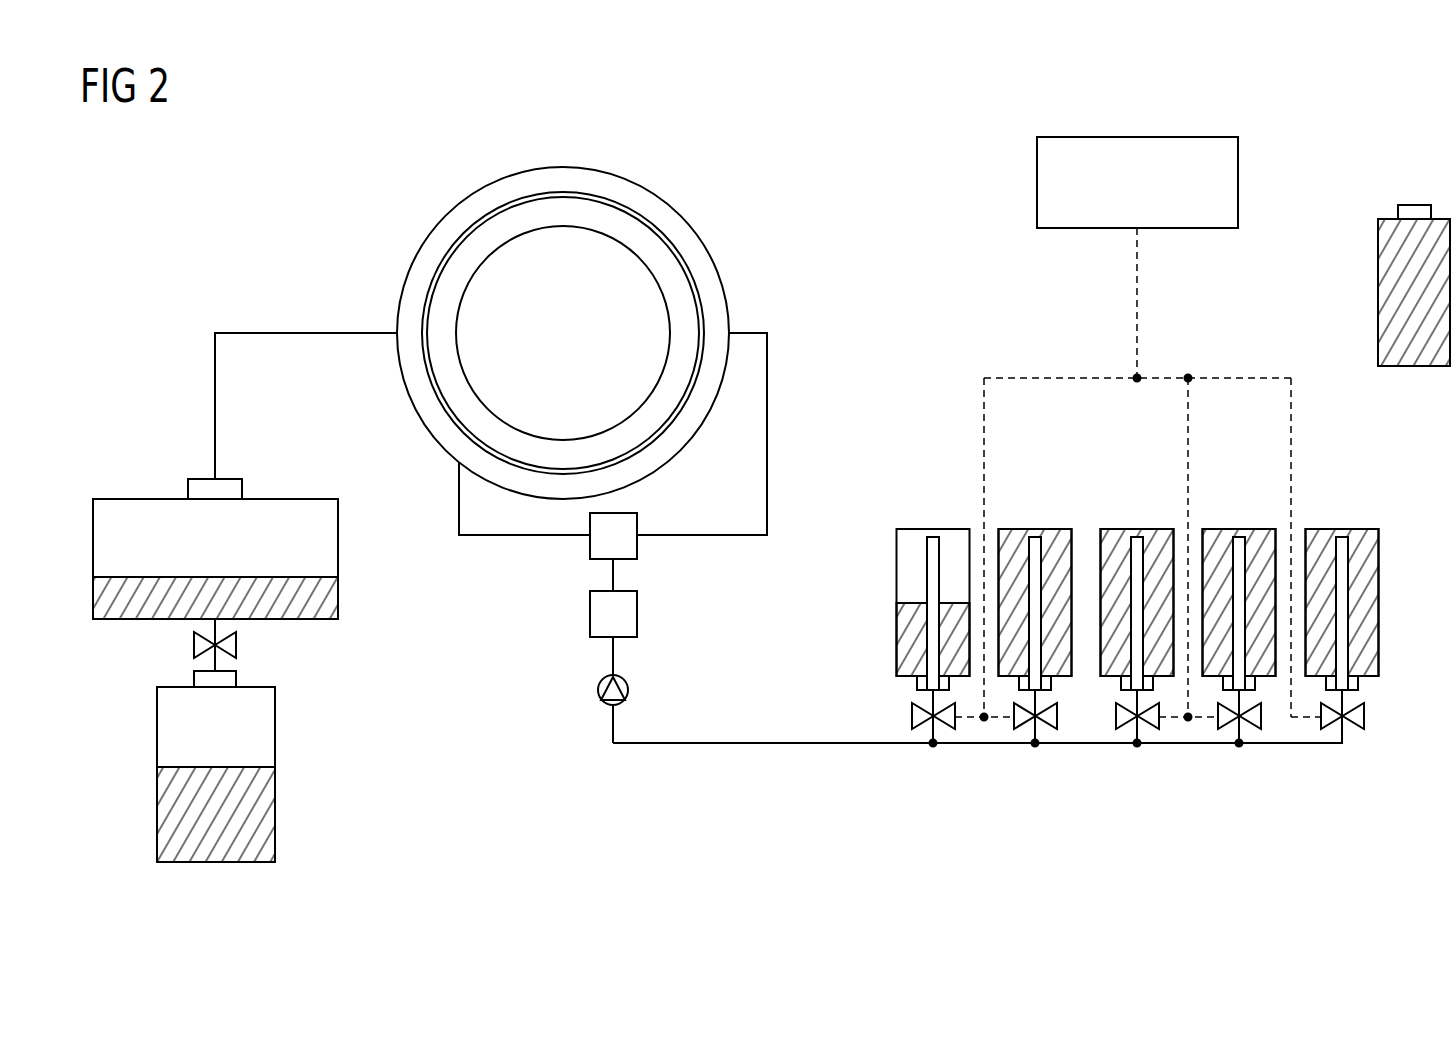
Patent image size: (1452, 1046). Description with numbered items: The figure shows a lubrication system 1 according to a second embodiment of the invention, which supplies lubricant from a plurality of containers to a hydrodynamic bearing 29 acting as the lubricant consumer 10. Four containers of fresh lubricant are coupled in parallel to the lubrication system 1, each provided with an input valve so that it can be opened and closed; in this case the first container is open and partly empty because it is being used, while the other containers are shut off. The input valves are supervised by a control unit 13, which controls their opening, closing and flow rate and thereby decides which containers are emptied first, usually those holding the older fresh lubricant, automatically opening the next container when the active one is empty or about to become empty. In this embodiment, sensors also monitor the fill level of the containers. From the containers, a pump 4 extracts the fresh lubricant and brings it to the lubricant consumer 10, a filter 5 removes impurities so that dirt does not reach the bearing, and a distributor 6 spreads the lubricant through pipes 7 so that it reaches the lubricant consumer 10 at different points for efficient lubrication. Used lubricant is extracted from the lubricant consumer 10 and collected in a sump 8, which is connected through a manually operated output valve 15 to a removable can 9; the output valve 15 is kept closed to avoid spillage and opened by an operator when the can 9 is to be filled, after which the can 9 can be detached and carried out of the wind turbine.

The lubrication system 1 is at (255, 176).
The pump 4 is at (598, 690).
The filter 5 is at (590, 618).
The distributor 6 is at (590, 545).
The pipe 7 is at (660, 748).
The sump 8 is at (244, 549).
The removable can 9 is at (243, 766).
The lubricant consumer 10 is at (530, 333).
The control unit 13 is at (1123, 198).
The output valve 15 is at (240, 643).
The hydrodynamic bearing 29 is at (424, 244).